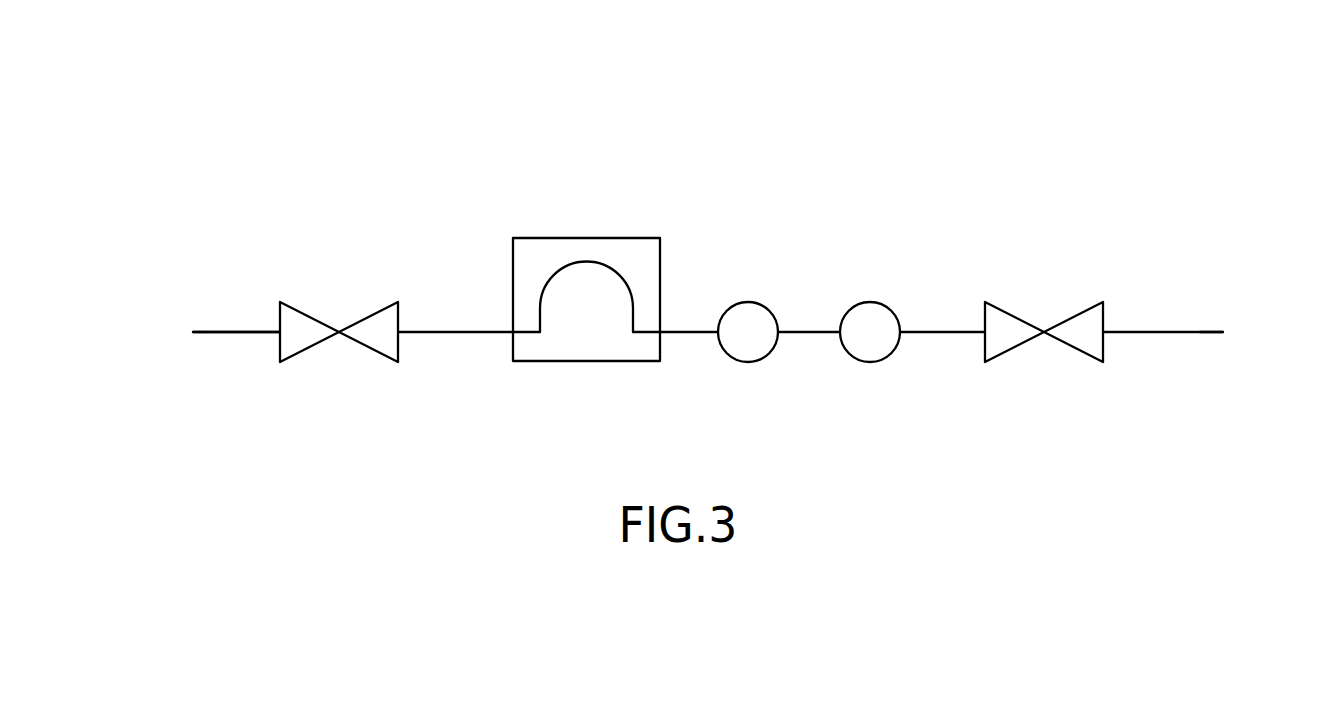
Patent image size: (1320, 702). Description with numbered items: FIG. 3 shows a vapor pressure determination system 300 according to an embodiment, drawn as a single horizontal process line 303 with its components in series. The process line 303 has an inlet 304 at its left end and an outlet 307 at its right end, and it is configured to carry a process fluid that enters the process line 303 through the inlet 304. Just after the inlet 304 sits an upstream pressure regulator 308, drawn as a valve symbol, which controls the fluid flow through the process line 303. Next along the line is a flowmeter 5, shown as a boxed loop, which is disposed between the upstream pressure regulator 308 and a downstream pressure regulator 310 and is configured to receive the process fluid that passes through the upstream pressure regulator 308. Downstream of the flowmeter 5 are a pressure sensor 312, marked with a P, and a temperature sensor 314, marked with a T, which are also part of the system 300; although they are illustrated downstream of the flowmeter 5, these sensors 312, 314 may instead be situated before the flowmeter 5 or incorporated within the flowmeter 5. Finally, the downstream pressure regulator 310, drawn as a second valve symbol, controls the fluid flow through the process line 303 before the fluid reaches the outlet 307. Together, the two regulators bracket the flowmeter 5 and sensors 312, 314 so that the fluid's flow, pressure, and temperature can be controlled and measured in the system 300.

The vapor pressure determination system 300 is at (436, 163).
The process line 303 is at (228, 332).
The inlet 304 is at (193, 332).
The upstream pressure regulator 308 is at (378, 313).
The flowmeter 5 is at (548, 238).
The pressure sensor 312 is at (752, 302).
The temperature sensor 314 is at (893, 310).
The downstream pressure regulator 310 is at (1083, 308).
The outlet 307 is at (1207, 332).